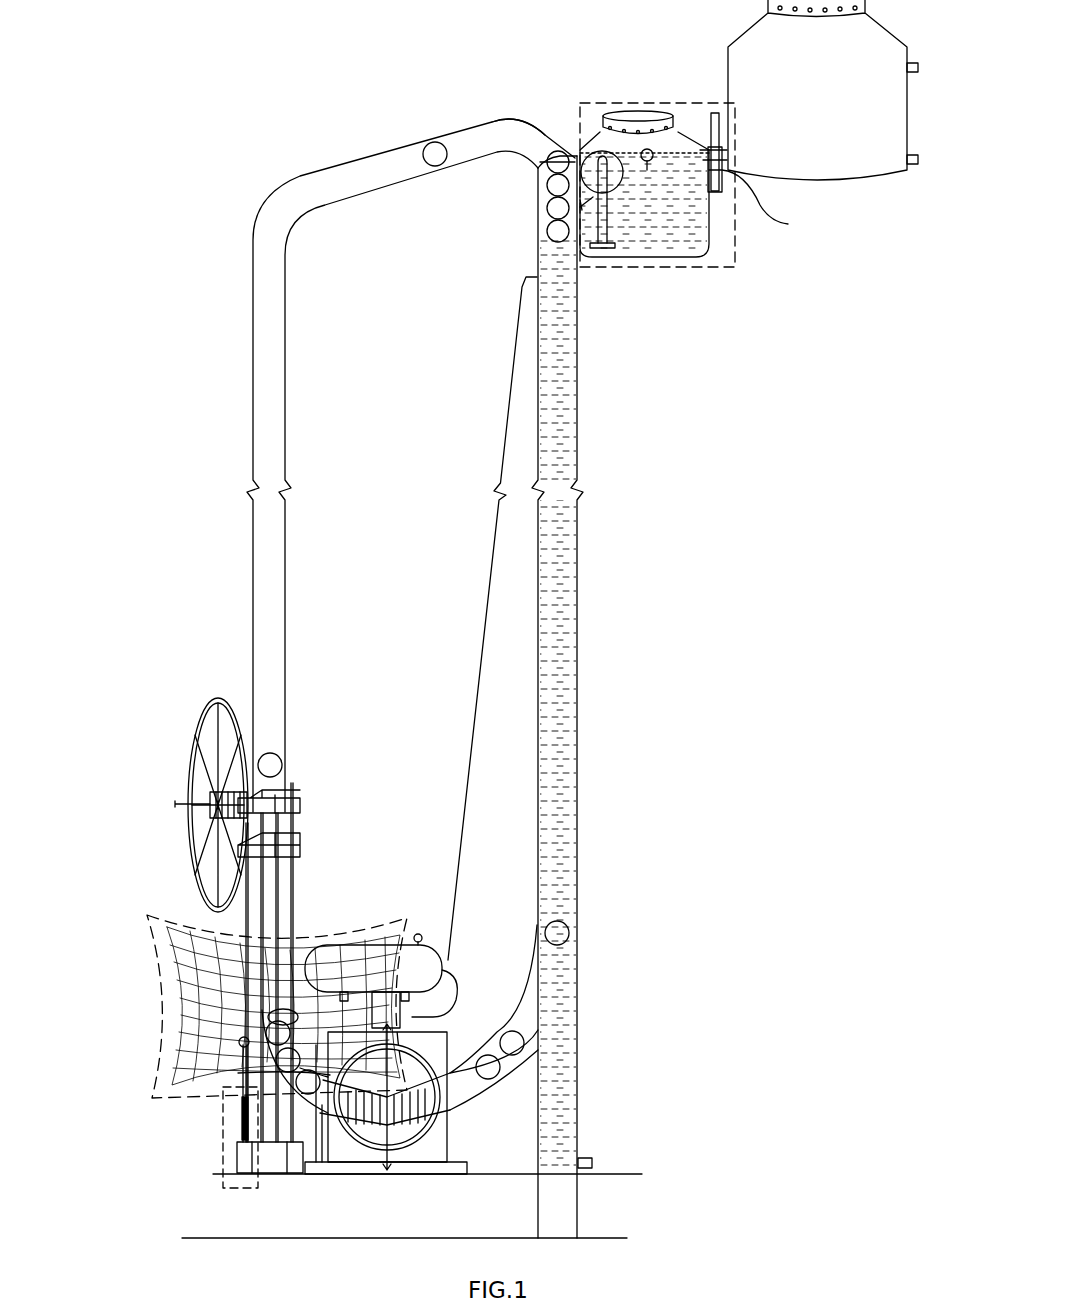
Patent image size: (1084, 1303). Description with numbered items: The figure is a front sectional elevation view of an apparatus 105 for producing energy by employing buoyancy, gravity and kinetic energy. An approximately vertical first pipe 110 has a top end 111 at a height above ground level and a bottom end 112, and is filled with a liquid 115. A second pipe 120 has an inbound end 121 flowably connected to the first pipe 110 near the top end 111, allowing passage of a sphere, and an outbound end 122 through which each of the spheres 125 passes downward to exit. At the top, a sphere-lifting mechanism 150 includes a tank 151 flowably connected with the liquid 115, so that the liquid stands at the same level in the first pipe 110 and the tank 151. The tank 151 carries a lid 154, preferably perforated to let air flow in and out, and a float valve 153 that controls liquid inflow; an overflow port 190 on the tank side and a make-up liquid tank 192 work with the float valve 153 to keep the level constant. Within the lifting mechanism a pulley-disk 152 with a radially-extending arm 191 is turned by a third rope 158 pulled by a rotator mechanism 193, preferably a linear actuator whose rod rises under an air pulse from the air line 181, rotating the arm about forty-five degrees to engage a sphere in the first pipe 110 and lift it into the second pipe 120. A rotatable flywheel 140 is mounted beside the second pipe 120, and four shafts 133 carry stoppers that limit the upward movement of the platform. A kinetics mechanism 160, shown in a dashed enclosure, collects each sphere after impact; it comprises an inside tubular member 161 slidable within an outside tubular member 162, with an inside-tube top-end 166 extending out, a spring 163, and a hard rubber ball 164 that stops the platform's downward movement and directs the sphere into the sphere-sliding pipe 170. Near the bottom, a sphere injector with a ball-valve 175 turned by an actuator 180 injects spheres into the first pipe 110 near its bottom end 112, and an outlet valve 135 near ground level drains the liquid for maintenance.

The apparatus 105 is at (337, 108).
The first pipe 110 is at (578, 423).
The top end 111 is at (530, 166).
The bottom end 112 is at (583, 1180).
The liquid 115 is at (555, 527).
The second pipe 120 is at (252, 285).
The inbound end 121 is at (537, 136).
The outbound end 122 is at (294, 770).
The spheres 125 is at (428, 150).
The shafts 133 is at (292, 937).
The outlet valve 135 is at (588, 1157).
The rotatable flywheel 140 is at (197, 748).
The sphere-lifting mechanism 150 is at (737, 265).
The tank 151 is at (702, 153).
The pulley-disk 152 is at (590, 187).
The float valve 153 is at (647, 162).
The lid 154 is at (628, 120).
The third rope 158 is at (603, 150).
The kinetics mechanism 160 is at (170, 983).
The inside tubular member 161 is at (237, 1073).
The outside tubular member 162 is at (238, 1097).
The spring 163 is at (238, 1125).
The hard rubber ball 164 is at (238, 1041).
The inside-tube top-end 166 is at (236, 1048).
The sphere-sliding pipe 170 is at (312, 1095).
The ball-valve 175 is at (450, 1128).
The actuator 180 is at (390, 1008).
The air line 181 is at (507, 367).
The overflow port 190 is at (700, 157).
The radially-extending arm 191 is at (583, 252).
The make-up liquid tank 192 is at (875, 167).
The rotator mechanism 193 is at (766, 203).